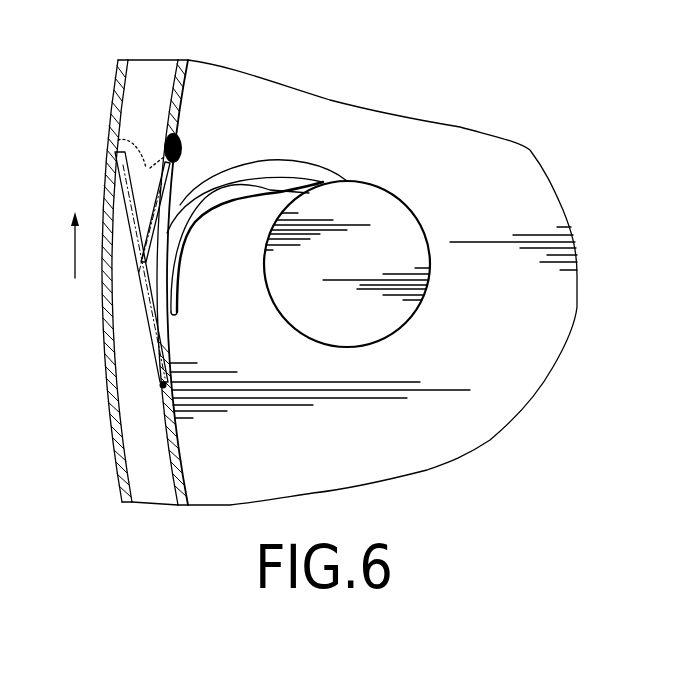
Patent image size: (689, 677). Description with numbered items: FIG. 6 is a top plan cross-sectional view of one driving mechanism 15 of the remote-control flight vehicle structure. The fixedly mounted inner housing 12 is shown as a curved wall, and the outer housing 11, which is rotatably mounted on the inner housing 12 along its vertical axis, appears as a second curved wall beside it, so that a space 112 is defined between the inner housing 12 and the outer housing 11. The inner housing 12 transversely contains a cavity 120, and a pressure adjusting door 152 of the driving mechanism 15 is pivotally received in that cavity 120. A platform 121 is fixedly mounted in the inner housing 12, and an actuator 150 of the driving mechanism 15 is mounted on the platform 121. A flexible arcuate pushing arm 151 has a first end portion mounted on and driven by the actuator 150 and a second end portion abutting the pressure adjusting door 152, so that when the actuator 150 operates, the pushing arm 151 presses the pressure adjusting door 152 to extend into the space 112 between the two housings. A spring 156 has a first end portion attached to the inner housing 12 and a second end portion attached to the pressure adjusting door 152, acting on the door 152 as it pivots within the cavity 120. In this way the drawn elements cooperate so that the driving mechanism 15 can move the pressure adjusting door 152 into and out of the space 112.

The outer housing 11 is at (112, 103).
The inner housing 12 is at (180, 92).
The space 112 is at (156, 68).
The spring 156 is at (120, 137).
The pressure adjusting door 152 is at (133, 277).
The flexible arcuate pushing arm 151 is at (267, 188).
The driving mechanism 15 is at (335, 147).
The platform 121 is at (427, 128).
The actuator 150 is at (415, 234).
The cavity 120 is at (170, 336).